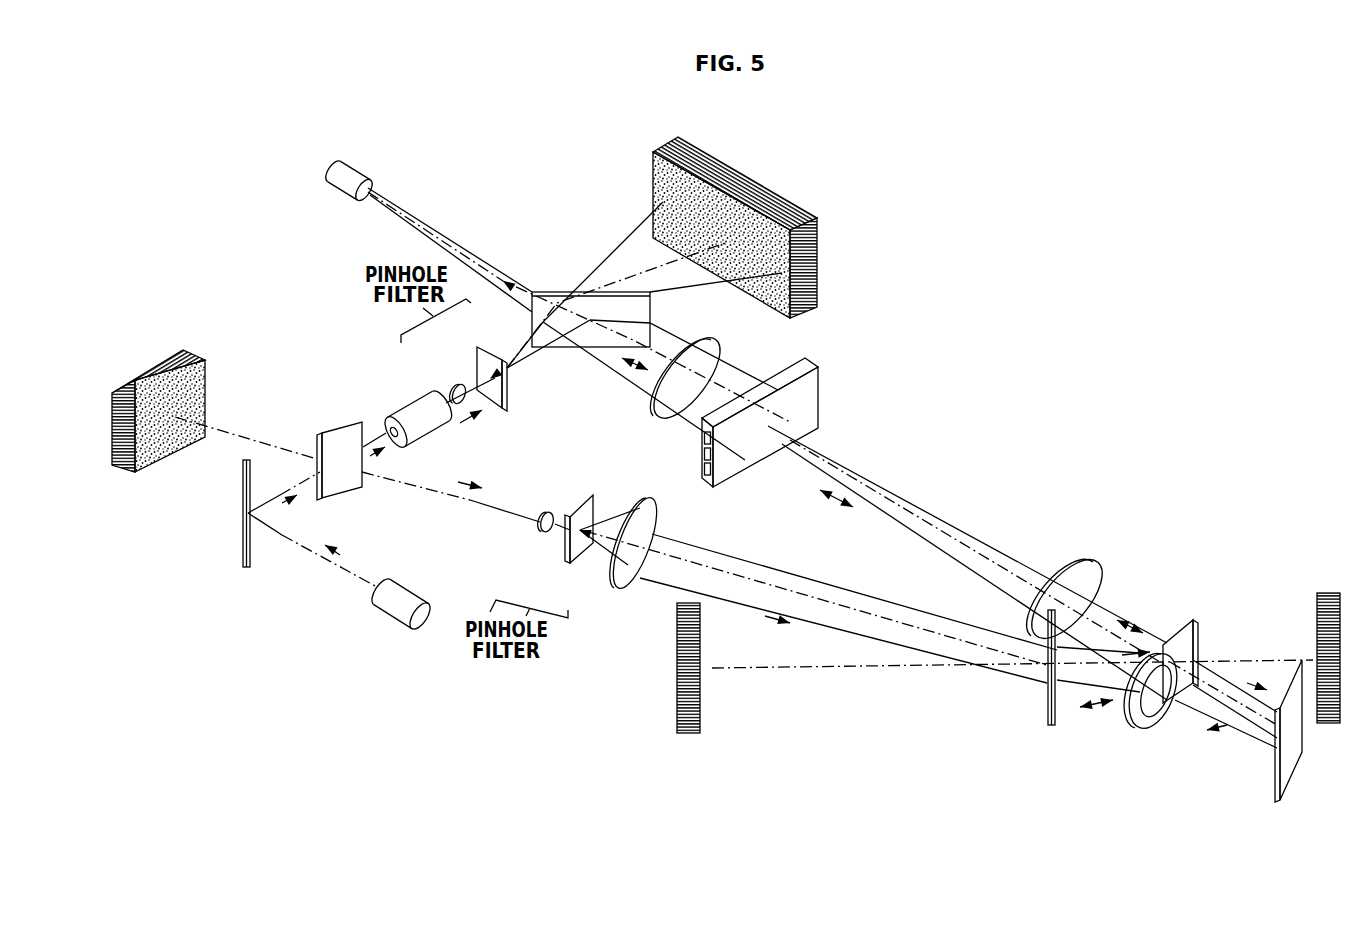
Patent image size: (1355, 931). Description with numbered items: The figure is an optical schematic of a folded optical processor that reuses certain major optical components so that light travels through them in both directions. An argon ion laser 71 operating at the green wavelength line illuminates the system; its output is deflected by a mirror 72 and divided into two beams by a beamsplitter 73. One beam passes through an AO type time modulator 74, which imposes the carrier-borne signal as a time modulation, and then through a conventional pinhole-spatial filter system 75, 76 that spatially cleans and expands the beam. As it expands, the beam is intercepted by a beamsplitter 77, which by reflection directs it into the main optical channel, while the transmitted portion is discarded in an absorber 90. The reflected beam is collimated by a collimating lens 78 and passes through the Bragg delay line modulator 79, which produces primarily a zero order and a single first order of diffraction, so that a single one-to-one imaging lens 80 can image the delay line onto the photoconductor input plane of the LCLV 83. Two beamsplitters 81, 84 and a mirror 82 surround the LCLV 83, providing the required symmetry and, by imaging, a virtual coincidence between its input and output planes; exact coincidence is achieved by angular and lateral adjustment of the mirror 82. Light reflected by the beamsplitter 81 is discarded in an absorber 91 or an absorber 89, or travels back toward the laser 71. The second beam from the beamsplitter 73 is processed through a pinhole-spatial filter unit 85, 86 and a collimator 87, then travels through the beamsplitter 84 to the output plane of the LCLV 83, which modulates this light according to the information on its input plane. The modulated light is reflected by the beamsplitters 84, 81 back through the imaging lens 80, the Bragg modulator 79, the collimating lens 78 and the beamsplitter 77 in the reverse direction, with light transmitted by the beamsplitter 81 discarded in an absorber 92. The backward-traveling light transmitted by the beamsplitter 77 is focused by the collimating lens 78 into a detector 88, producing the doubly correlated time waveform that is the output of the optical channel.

The argon ion laser 71 is at (382, 612).
The mirror 72 is at (238, 550).
The beamsplitter 73 is at (360, 492).
The AO type time modulator 74 is at (407, 398).
The pinhole-spatial filter system 75 is at (450, 392).
The pinhole-spatial filter system 76 is at (474, 360).
The beamsplitter 77 is at (599, 292).
The collimating lens 78 is at (716, 344).
The Bragg delay line modulator 79 is at (823, 383).
The imaging lens 80 is at (1063, 560).
The beamsplitter 81 is at (1170, 640).
The mirror 82 is at (1276, 790).
The LCLV 83 is at (1142, 728).
The beamsplitter 84 is at (1042, 713).
The pinhole-spatial filter unit 85 is at (540, 535).
The pinhole-spatial filter unit 86 is at (568, 563).
The collimator 87 is at (640, 496).
The detector 88 is at (336, 193).
The absorber 89 is at (188, 350).
The absorber 90 is at (780, 188).
The absorber 91 is at (676, 719).
The absorber 92 is at (1317, 593).